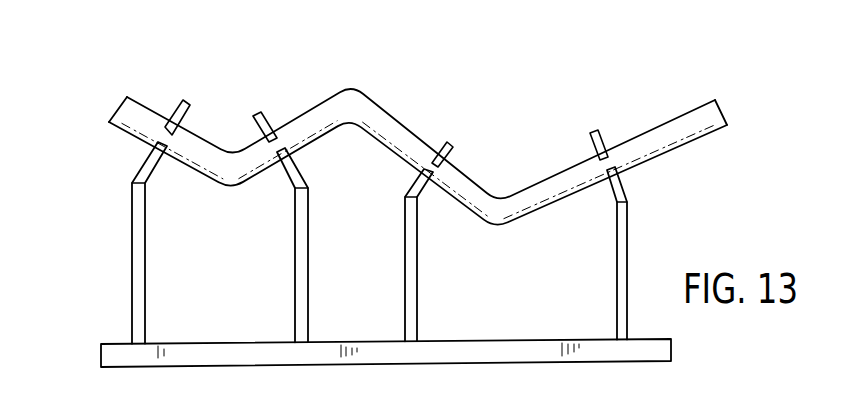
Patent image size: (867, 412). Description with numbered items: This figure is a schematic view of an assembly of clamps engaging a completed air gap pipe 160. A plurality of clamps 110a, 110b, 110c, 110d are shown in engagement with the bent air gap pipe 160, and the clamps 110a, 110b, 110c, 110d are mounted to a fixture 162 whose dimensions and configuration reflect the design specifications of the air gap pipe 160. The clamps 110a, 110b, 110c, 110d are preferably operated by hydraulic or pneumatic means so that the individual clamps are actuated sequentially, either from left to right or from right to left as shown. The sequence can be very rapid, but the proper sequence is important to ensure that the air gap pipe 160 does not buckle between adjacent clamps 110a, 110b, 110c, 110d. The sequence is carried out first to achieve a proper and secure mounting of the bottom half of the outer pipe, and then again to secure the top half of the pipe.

The air gap pipe 160 is at (708, 104).
The fixture 162 is at (112, 280).
The clamp 110a is at (188, 99).
The clamp 110b is at (260, 112).
The clamp 110c is at (449, 142).
The clamp 110d is at (598, 129).